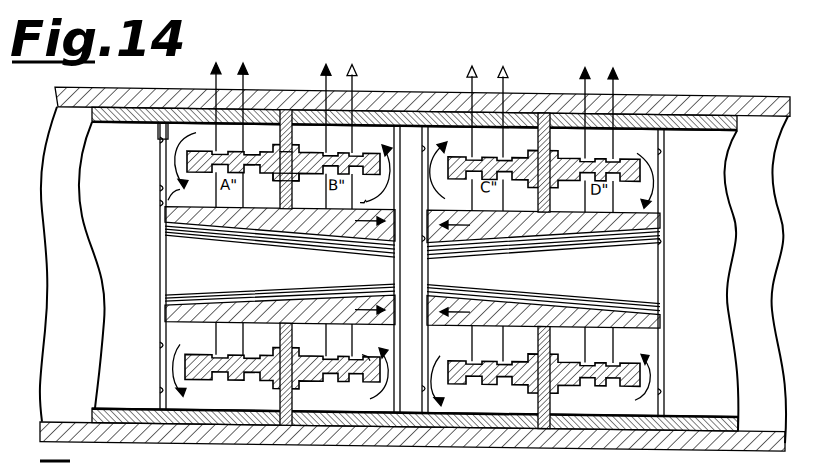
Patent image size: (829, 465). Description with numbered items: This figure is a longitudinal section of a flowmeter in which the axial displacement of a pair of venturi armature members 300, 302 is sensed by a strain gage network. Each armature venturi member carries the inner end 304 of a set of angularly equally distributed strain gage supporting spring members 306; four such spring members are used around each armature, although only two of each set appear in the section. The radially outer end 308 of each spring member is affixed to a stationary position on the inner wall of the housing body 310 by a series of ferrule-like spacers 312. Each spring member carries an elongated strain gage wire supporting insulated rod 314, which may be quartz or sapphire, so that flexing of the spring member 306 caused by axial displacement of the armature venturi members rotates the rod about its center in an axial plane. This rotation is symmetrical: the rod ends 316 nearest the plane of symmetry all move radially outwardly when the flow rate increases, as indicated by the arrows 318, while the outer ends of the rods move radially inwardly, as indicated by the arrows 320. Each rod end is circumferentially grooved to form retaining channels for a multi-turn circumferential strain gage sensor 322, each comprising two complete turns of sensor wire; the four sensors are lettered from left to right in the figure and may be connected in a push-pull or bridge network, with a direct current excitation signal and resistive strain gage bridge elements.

The venturi armature member 300 is at (292, 272).
The venturi armature member 302 is at (583, 272).
The inner end of spring member 304 is at (277, 200).
The strain gage supporting spring member 306 is at (257, 104).
The radially outer end of spring member 308 is at (291, 104).
The housing body 310 is at (518, 85).
The ferrule-like spacer 312 is at (368, 104).
The strain gage wire supporting insulated rod 314 is at (186, 163).
The rod end 316 is at (374, 278).
The arrow 318 is at (362, 267).
The arrow 320 is at (165, 201).
The multi-turn circumferential strain gage sensor 322 is at (163, 129).